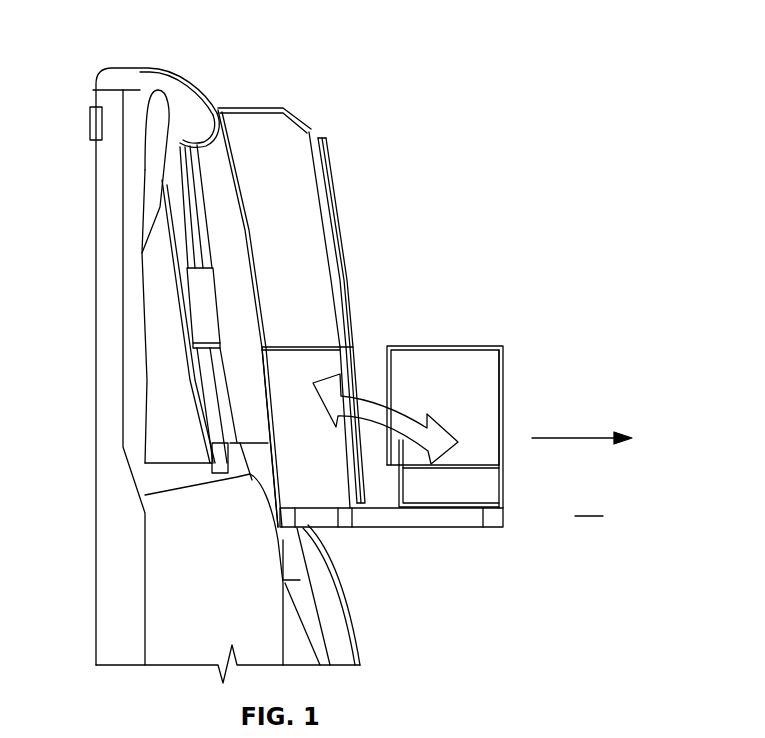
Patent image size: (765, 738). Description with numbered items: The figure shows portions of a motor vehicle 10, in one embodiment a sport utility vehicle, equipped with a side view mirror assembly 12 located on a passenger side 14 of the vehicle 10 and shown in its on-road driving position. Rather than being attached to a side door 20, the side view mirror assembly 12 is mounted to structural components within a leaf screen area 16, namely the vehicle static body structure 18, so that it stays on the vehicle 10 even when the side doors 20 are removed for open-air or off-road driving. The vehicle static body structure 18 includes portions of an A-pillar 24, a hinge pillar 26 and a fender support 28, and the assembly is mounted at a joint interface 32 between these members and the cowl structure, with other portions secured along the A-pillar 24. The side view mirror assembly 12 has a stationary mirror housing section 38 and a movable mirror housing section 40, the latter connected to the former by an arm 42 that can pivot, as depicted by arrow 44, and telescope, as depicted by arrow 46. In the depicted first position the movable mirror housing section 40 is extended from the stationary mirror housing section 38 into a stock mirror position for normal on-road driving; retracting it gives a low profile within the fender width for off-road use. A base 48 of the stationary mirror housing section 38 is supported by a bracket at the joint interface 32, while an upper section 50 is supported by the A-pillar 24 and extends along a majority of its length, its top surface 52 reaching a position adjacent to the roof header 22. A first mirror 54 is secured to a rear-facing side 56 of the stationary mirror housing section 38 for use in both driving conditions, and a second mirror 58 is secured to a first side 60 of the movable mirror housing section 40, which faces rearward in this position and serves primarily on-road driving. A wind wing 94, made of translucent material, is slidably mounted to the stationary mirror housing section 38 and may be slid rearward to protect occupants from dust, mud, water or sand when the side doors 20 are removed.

The motor vehicle 10 is at (128, 58).
The side view mirror assembly 12 is at (390, 214).
The passenger side 14 is at (370, 642).
The leaf screen area 16 is at (182, 455).
The vehicle static body structure 18 is at (219, 442).
The side door 20 is at (167, 625).
The roof header 22 is at (215, 108).
The A-pillar 24 is at (214, 167).
The hinge pillar 26 is at (296, 568).
The fender support 28 is at (325, 550).
The joint interface 32 is at (279, 542).
The stationary mirror housing section 38 is at (340, 308).
The movable mirror housing section 40 is at (515, 368).
The arm 42 is at (415, 518).
The arrow 44 is at (363, 423).
The arrow 46 is at (582, 438).
The base 48 is at (320, 468).
The upper section 50 is at (330, 203).
The top surface 52 is at (286, 107).
The first mirror 54 is at (287, 185).
The rear-facing side 56 is at (292, 423).
The second mirror 58 is at (487, 420).
The first side 60 is at (490, 449).
The wind wing 94 is at (343, 273).